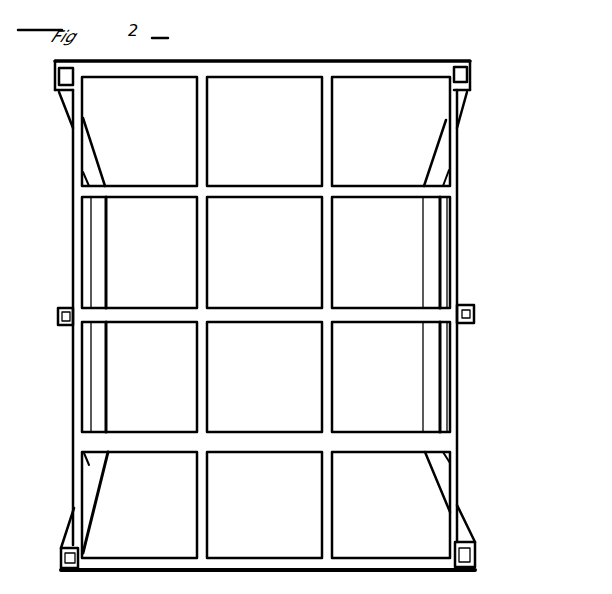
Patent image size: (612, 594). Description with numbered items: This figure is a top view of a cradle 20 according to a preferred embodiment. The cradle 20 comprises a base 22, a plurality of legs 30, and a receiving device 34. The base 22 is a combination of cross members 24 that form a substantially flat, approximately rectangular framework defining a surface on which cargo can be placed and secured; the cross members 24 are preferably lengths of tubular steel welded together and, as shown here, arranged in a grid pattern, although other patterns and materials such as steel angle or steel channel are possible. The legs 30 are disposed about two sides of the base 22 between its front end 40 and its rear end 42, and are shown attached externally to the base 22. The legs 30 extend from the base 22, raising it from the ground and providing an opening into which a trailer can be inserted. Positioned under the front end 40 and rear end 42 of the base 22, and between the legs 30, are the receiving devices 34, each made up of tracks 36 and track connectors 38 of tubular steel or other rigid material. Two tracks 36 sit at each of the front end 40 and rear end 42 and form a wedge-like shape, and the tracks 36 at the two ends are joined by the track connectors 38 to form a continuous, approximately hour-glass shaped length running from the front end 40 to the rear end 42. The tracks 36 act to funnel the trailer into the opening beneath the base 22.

The cradle 20 is at (373, 58).
The base 22 is at (330, 60).
The cross members 24 is at (320, 249).
The legs 30 is at (70, 77).
The receiving device 34 is at (423, 356).
The tracks 36 is at (92, 148).
The track connectors 38 is at (422, 237).
The front end 40 is at (258, 60).
The rear end 42 is at (262, 572).